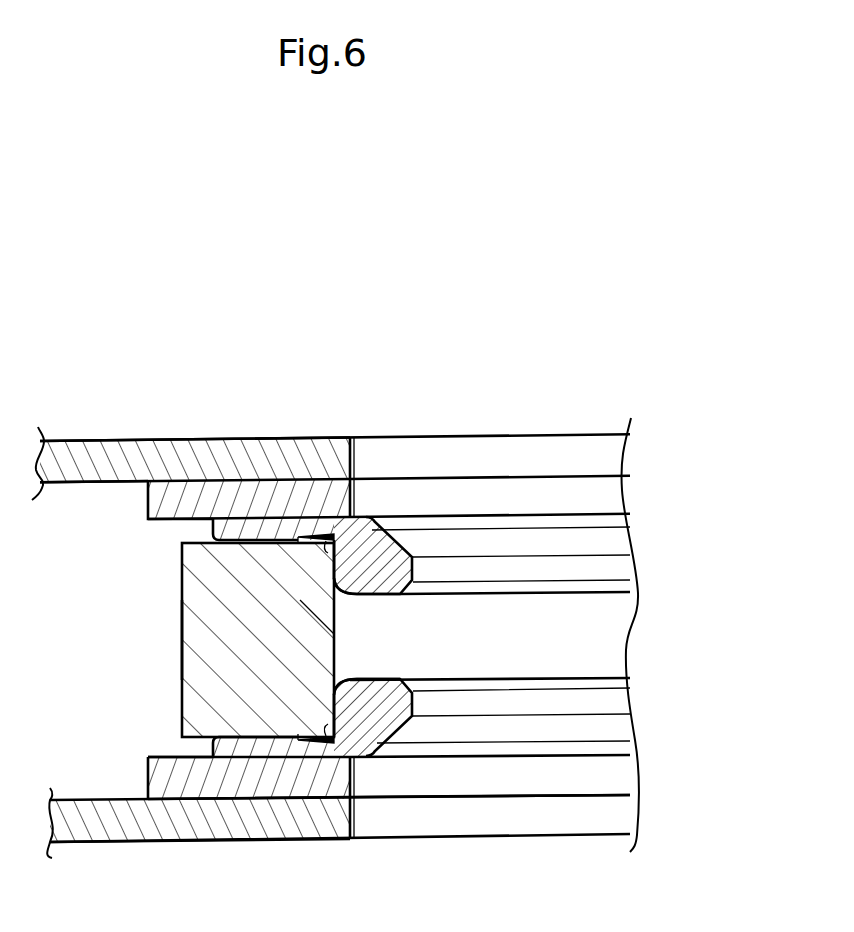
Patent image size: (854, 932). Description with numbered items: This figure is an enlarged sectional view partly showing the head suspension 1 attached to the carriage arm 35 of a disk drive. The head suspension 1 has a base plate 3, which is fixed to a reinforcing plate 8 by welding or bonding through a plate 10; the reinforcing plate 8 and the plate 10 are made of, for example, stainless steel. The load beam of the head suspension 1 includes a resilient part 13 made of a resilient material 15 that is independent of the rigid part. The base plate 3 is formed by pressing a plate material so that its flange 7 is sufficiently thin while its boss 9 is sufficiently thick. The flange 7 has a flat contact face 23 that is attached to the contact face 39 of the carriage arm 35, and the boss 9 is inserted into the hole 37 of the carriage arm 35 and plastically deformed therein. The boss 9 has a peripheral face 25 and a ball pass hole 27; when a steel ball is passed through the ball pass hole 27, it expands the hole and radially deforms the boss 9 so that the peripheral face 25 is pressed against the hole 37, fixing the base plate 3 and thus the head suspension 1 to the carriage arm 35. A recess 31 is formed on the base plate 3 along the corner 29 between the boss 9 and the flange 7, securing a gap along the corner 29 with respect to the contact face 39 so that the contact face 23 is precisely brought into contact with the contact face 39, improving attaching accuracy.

The head suspension 1 is at (517, 438).
The base plate 3 is at (470, 528).
The flange 7 is at (214, 536).
The reinforcing plate 8 is at (590, 437).
The boss 9 is at (378, 594).
The plate 10 is at (626, 497).
The resilient part 13 is at (130, 440).
The resilient material 15 is at (78, 440).
The contact face 23 is at (245, 543).
The peripheral face 25 is at (340, 563).
The ball pass hole 27 is at (420, 565).
The corner 29 is at (342, 455).
The recess 31 is at (302, 515).
The carriage arm 35 is at (182, 620).
The hole 37 is at (361, 444).
The contact face 39 is at (247, 541).